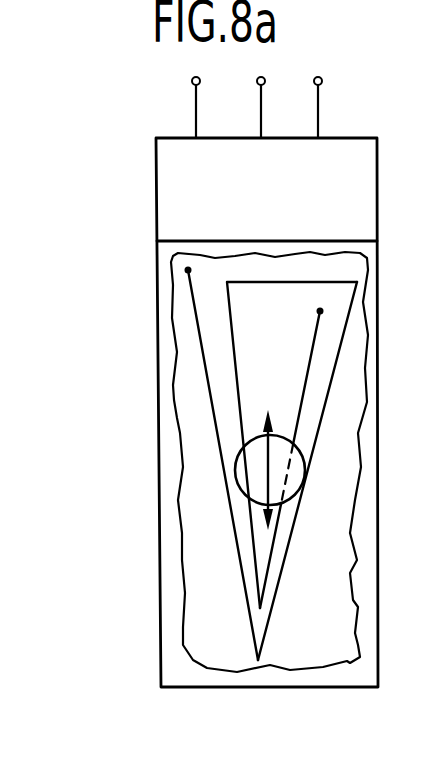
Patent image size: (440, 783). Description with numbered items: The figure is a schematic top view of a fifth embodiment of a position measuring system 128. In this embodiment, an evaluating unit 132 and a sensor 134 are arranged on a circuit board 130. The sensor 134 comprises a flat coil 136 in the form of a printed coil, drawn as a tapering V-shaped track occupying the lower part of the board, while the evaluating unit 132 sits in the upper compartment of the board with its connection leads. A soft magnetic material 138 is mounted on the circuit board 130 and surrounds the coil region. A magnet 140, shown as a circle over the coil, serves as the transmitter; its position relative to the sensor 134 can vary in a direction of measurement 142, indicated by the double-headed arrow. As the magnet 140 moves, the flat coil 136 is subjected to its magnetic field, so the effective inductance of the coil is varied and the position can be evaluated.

The position measuring system 128 is at (113, 450).
The circuit board 130 is at (158, 368).
The evaluating unit 132 is at (176, 197).
The sensor 134 is at (330, 650).
The flat coil 136 is at (243, 588).
The soft magnetic material 138 is at (208, 668).
The magnet 140 is at (251, 462).
The direction of measurement 142 is at (251, 431).